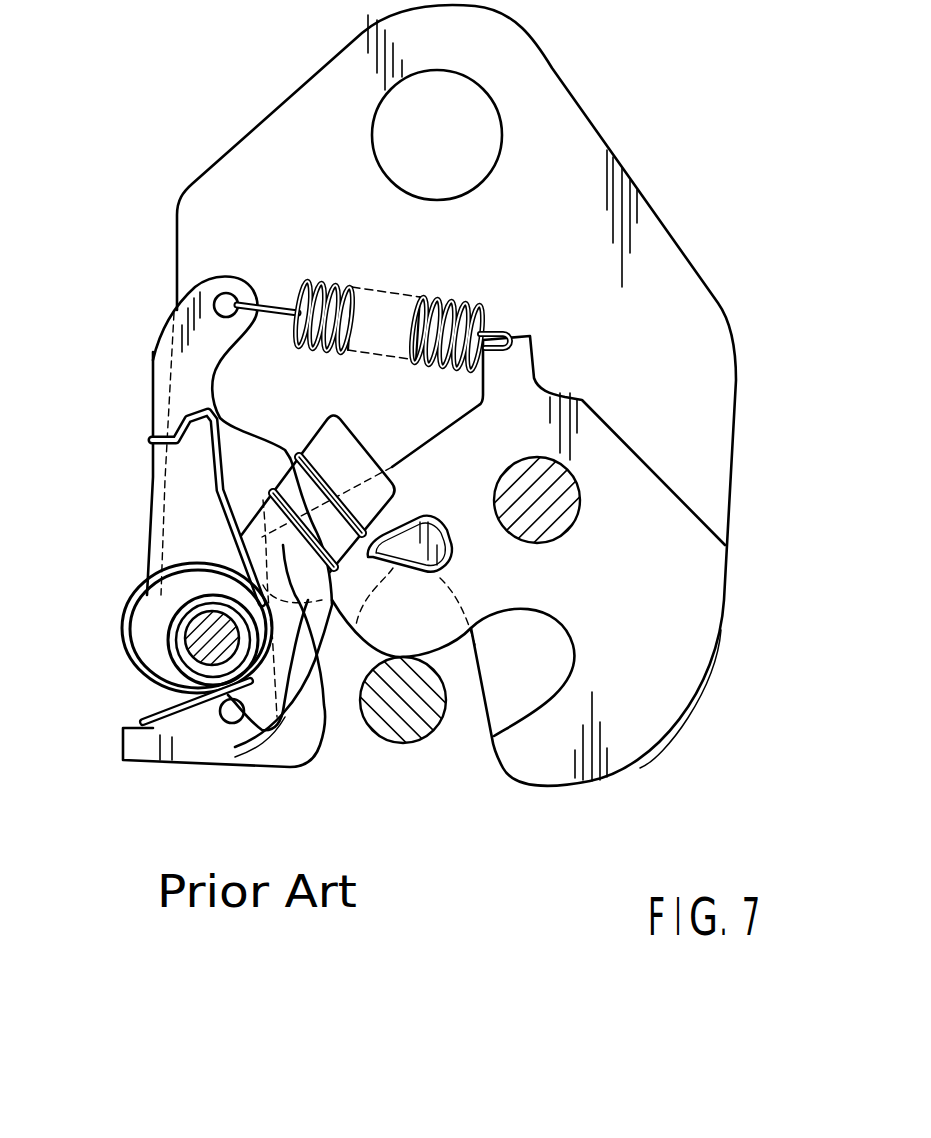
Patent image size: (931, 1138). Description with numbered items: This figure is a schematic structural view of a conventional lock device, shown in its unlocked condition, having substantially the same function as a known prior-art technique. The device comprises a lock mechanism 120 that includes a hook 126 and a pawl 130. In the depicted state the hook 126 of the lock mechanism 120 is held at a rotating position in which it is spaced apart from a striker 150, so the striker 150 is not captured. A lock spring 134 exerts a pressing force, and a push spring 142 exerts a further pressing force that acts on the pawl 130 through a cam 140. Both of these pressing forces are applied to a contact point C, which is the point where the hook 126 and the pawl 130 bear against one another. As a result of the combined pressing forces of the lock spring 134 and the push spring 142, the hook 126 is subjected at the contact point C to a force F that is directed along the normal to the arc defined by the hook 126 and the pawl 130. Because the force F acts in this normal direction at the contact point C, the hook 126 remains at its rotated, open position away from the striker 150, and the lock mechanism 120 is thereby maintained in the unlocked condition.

The lock mechanism 120 is at (643, 180).
The hook 126 is at (668, 499).
The pawl 130 is at (163, 400).
The lock spring 134 is at (341, 295).
The cam 140 is at (187, 533).
The push spring 142 is at (193, 478).
The striker 150 is at (433, 723).
The contact point C is at (335, 558).
The force F is at (323, 705).